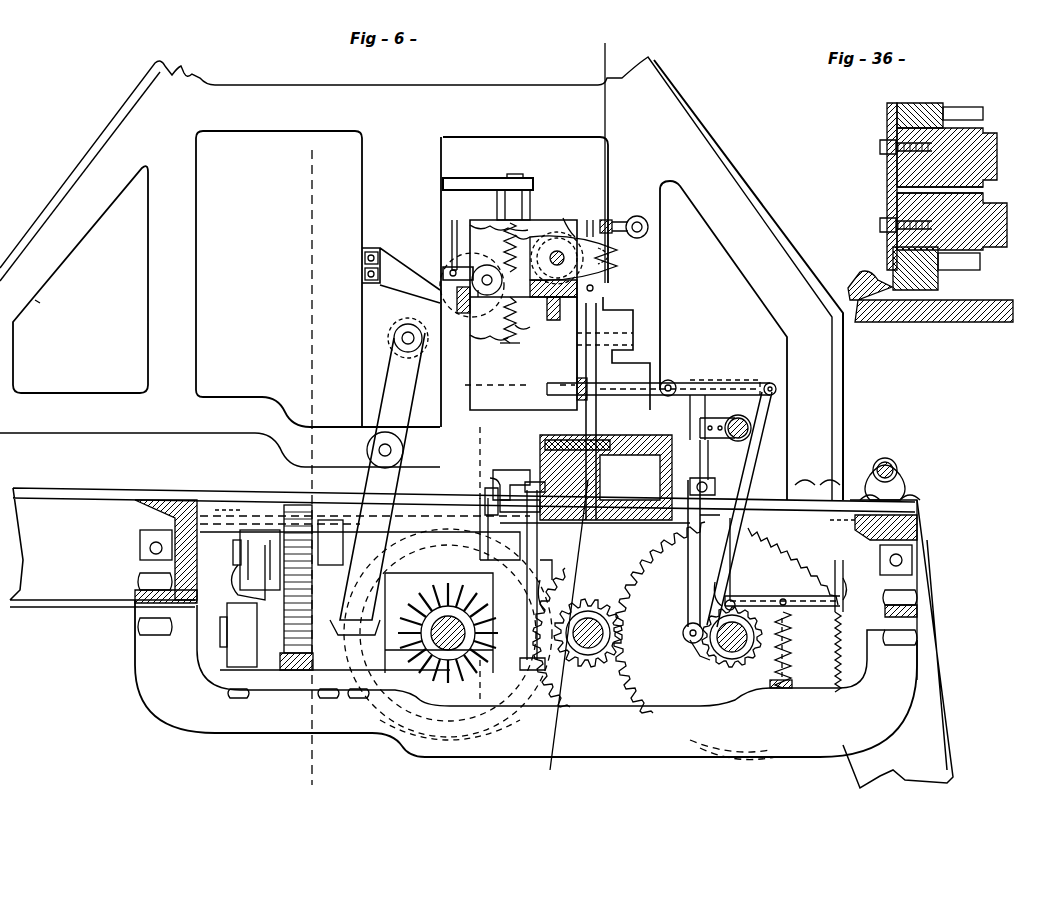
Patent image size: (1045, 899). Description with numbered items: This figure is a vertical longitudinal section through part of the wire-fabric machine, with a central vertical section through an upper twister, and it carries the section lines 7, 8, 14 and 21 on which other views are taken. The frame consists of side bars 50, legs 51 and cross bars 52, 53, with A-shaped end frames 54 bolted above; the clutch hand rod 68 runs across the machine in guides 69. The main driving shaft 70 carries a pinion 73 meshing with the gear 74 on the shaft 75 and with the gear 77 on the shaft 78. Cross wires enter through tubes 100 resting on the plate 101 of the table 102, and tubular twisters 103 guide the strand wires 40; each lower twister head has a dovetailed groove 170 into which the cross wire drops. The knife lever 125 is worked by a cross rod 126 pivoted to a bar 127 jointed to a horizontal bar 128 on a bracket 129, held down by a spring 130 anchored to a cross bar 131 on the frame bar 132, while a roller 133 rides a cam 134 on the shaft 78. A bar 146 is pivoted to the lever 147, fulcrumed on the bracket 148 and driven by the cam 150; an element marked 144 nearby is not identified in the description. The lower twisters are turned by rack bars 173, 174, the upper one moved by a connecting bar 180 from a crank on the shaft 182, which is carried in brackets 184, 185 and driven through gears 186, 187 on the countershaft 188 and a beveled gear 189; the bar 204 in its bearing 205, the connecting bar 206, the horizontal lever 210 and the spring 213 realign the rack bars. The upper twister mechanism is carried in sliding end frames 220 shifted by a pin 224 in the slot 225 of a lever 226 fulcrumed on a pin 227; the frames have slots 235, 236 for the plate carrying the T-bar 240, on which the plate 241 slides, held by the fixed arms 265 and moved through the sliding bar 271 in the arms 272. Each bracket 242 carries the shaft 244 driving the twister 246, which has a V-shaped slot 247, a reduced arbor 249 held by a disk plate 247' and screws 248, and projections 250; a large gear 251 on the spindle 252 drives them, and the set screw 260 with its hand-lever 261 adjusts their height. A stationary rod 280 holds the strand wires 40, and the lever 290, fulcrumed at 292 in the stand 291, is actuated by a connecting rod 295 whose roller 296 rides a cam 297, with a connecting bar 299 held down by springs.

In FIG. 6, the section line 7— 7 is at (294, 777).
In FIG. 6, the section line 8— 8 is at (847, 508).
In FIG. 6, the section line 14— 14 is at (470, 689).
In FIG. 6, the section line 21— 21 is at (697, 408).
In FIG. 6, the strand wires 40 is at (614, 548).
In FIG. 6, the side bars 50 is at (43, 503).
In FIG. 6, the legs 51 is at (950, 740).
In FIG. 6, the cross bar 52 is at (905, 533).
In FIG. 6, the cross bar 53 is at (153, 520).
In FIG. 6, the end frames 54 is at (390, 99).
In FIG. 6, the hand rod 68 is at (900, 470).
In FIG. 6, the guides 69 is at (885, 462).
In FIG. 6, the main driving shaft 70 is at (590, 650).
In FIG. 6, the pinion 73 is at (598, 615).
In FIG. 6, the gear 74 is at (548, 600).
In FIG. 6, the shaft 75 is at (452, 685).
In FIG. 6, the gear 77 is at (650, 570).
In FIG. 6, the shaft 78 is at (718, 652).
In FIG. 6, the tubes 100 is at (705, 390).
In FIG. 6, the table top plate 101 is at (655, 452).
In FIG. 6, the table 102 is at (625, 452).
In FIG. 6, the twisters 103 is at (590, 522).
In FIG. 6, the lever 125 is at (690, 390).
In FIG. 6, the cross rod 126 is at (748, 428).
In FIG. 6, the bar 127 is at (735, 548).
In FIG. 6, the horizontal bar 128 is at (790, 598).
In FIG. 6, the bracket 129 is at (840, 580).
In FIG. 6, the spring 130 is at (790, 655).
In FIG. 6, the cross bar 131 is at (778, 690).
In FIG. 6, the frame bar 132 is at (865, 728).
In FIG. 6, the roller 133 is at (758, 588).
In FIG. 6, the cam 134 is at (752, 655).
In FIG. 6, the pivot 144 is at (690, 628).
In FIG. 6, the bar 146 is at (735, 440).
In FIG. 6, the lever 147 is at (688, 590).
In FIG. 6, the bracket 148 is at (705, 487).
In FIG. 6, the cam 150 is at (693, 645).
In FIG. 6, the groove 170 is at (448, 605).
In FIG. 6, the lower rack bar 173 is at (565, 545).
In FIG. 6, the upper rack bar 174 is at (560, 520).
In FIG. 6, the connecting bar 180 is at (575, 568).
In FIG. 6, the shaft 182 is at (322, 537).
In FIG. 6, the bracket 184 is at (403, 542).
In FIG. 6, the bracket 185 is at (258, 575).
In FIG. 6, the gear 186 is at (298, 505).
In FIG. 6, the gear 187 is at (296, 668).
In FIG. 6, the countershaft 188 is at (218, 632).
In FIG. 6, the beveled gear 189 is at (410, 672).
In FIG. 6, the bar 204 is at (505, 468).
In FIG. 6, the bearing 205 is at (490, 477).
In FIG. 6, the connecting bar 206 is at (522, 480).
In FIG. 6, the horizontal lever 210 is at (510, 508).
In FIG. 6, the spring 213 is at (488, 490).
In FIG. 6, the end frames 220 is at (468, 385).
In FIG. 6, the pin 224 is at (395, 337).
In FIG. 6, the slot 225 is at (400, 343).
In FIG. 6, the lever 226 is at (395, 378).
In FIG. 6, the pin 227 is at (368, 450).
In FIG. 6, the vertical slot 235 is at (590, 215).
In FIG. 6, the vertical slot 236 is at (450, 222).
In FIG. 6, the T-bar 240 is at (530, 322).
In FIG. 6, the plate 241 is at (585, 285).
In FIG. 36, the plate 241 is at (968, 318).
In FIG. 6, the bracket 242 is at (573, 205).
In FIG. 36, the bracket 242 is at (930, 97).
In FIG. 6, the shaft 244 is at (557, 252).
In FIG. 36, the upper twister 246 is at (975, 108).
In FIG. 6, the V-shaped radial slot 247 is at (594, 258).
In FIG. 36, the disk plate 247' is at (868, 186).
In FIG. 36, the screws 248 is at (880, 225).
In FIG. 36, the reduced portion 249 is at (887, 172).
In FIG. 36, the projections 250 is at (995, 133).
In FIG. 6, the large gear 251 is at (502, 252).
In FIG. 6, the spindle 252 is at (495, 265).
In FIG. 6, the set screw 260 is at (512, 345).
In FIG. 6, the hand-lever 261 is at (490, 180).
In FIG. 6, the fixed arm 265 is at (562, 305).
In FIG. 6, the sliding bar 271 is at (470, 300).
In FIG. 6, the arms 272 is at (405, 288).
In FIG. 6, the stationary rod 280 is at (622, 218).
In FIG. 6, the lever 290 is at (765, 386).
In FIG. 6, the stand 291 is at (650, 375).
In FIG. 6, the fulcrum 292 is at (676, 378).
In FIG. 6, the connecting rod 295 is at (720, 455).
In FIG. 6, the roller 296 is at (718, 580).
In FIG. 6, the cam 297 is at (725, 600).
In FIG. 6, the connecting bar 299 is at (770, 598).